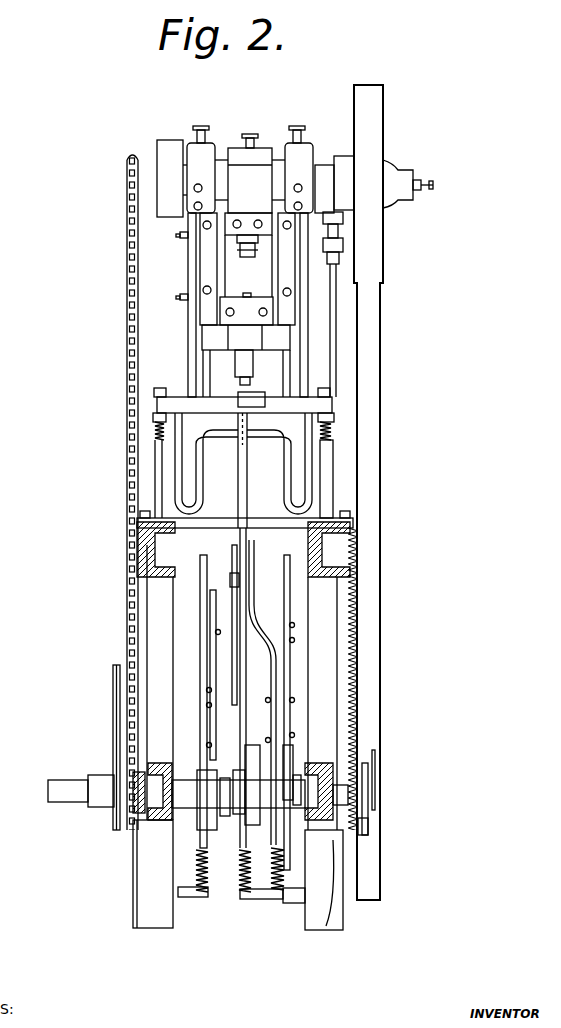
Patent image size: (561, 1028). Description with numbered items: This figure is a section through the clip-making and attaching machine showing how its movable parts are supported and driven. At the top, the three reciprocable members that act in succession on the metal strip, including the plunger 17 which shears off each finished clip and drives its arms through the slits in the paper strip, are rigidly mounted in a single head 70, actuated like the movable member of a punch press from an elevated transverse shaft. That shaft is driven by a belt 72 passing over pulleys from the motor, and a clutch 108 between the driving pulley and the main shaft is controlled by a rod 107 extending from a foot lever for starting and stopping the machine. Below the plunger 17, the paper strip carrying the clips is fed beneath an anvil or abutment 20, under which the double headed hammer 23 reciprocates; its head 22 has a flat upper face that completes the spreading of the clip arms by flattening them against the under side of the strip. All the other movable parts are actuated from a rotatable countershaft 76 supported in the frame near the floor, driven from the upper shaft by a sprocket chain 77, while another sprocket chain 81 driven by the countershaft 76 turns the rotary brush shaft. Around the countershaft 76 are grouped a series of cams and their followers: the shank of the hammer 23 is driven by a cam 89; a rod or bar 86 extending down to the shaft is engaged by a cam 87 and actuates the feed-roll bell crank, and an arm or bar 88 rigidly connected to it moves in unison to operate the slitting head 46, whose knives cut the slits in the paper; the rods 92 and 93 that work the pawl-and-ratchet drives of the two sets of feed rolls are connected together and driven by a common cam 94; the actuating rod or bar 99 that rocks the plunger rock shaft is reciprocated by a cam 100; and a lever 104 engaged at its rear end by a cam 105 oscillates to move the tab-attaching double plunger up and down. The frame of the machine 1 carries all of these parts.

The frame housing 1 is at (160, 600).
The plunger 17 is at (235, 366).
The anvil or abutment 20 is at (262, 407).
The second head 22 is at (241, 433).
The double headed hammer 23 is at (240, 432).
The reciprocable head 46 is at (255, 541).
The head 70 is at (246, 298).
The belt 72 is at (372, 456).
The countershaft 76 is at (68, 793).
The sprocket chain 77 is at (124, 566).
The sprocket chain 81 is at (112, 677).
The rod or bar 86 is at (291, 598).
The cam 87 is at (289, 812).
The arm or bar 88 is at (255, 613).
The cam 89 is at (259, 842).
The rod 92 is at (208, 618).
The rod 93 is at (216, 633).
The cam 94 is at (196, 818).
The actuating rod or bar 99 is at (140, 766).
The cam 100 is at (134, 816).
The lever 104 is at (362, 838).
The cam 105 is at (366, 788).
The rod 107 is at (336, 345).
The clutch 108 is at (325, 178).